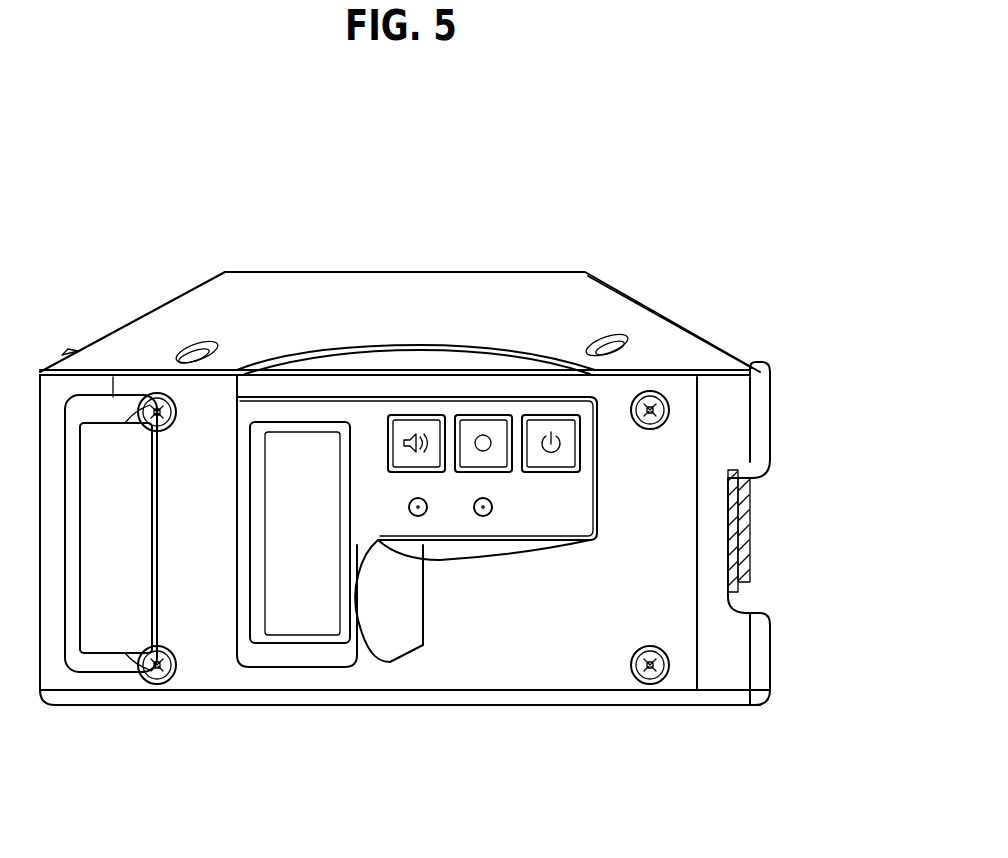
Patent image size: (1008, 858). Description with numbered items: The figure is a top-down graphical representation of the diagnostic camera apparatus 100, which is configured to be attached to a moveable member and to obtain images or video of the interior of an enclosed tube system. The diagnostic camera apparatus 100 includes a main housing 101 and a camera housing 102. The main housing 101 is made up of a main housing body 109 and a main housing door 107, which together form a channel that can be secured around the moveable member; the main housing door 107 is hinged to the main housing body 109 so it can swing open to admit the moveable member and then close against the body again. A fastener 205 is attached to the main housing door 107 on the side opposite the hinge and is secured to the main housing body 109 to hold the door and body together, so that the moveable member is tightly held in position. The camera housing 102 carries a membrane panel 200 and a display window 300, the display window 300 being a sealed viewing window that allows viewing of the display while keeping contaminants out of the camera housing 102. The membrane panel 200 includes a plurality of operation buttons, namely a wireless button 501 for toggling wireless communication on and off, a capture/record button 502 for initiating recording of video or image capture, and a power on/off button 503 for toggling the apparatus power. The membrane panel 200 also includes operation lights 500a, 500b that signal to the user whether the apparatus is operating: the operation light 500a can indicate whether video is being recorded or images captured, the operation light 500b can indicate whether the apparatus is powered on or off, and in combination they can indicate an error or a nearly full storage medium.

The diagnostic camera apparatus 100 is at (723, 133).
The main housing 101 is at (132, 337).
The camera housing 102 is at (190, 672).
The main housing door 107 is at (758, 680).
The main housing body 109 is at (725, 668).
The membrane panel 200 is at (580, 505).
The fastener 205 is at (782, 540).
The display window 300 is at (282, 605).
The operation light 500a is at (418, 516).
The operation light 500b is at (485, 516).
The wireless button 501 is at (433, 420).
The capture/record button 502 is at (482, 420).
The power on/off button 503 is at (543, 420).